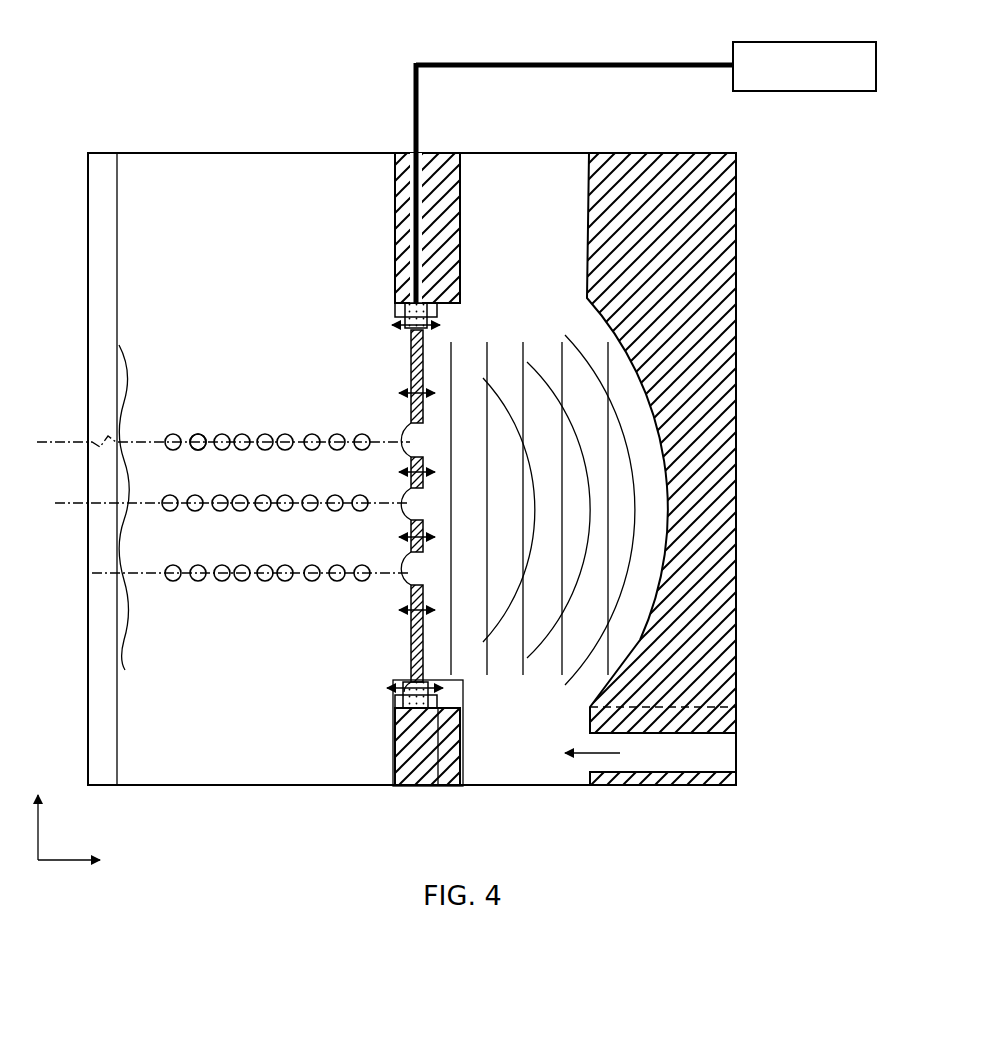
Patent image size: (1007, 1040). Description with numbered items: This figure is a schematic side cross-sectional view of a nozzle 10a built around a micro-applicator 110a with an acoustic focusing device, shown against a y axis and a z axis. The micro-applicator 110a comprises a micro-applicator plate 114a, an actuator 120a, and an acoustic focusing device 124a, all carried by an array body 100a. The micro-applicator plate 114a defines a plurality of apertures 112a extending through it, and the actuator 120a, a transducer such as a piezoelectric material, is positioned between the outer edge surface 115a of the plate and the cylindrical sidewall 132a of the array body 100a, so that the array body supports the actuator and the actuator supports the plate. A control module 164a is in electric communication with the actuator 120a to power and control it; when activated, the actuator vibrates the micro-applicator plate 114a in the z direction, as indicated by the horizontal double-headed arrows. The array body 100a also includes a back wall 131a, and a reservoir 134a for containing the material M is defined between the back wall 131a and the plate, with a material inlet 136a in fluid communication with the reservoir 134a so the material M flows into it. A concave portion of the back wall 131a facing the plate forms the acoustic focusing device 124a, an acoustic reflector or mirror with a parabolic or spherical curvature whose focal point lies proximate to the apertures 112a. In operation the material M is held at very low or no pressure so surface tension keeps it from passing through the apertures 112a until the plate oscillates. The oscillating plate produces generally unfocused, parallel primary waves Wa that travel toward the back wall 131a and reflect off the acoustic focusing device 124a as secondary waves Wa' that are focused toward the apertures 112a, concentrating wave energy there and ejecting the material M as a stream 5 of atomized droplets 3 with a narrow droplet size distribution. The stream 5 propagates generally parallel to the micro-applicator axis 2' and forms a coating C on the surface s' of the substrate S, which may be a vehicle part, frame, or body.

The ultrasonic processing apparatus 10a is at (349, 170).
The array body 100a is at (454, 151).
The control module 164a is at (733, 56).
The micro-applicator plate 114a is at (408, 338).
The apertures 112a is at (410, 423).
The outer edge surface 115a is at (412, 678).
The micro-applicator 110a is at (386, 711).
The actuator 120a is at (395, 755).
The cylindrical sidewall 132a is at (447, 772).
The acoustic focusing device 124a is at (667, 483).
The reservoir 134a is at (555, 315).
The back wall 131a is at (637, 642).
The material inlet 136a is at (699, 748).
The primary waves Wa is at (649, 486).
The secondary waves Wa' is at (677, 510).
The material M is at (613, 756).
The substrate S is at (73, 333).
The surface s' is at (223, 457).
The coating C is at (126, 360).
The stream 5 is at (230, 418).
The atomized droplets 3 is at (197, 434).
The micro-applicator axis 2' is at (265, 483).
The y axis y is at (39, 810).
The z axis z is at (83, 861).